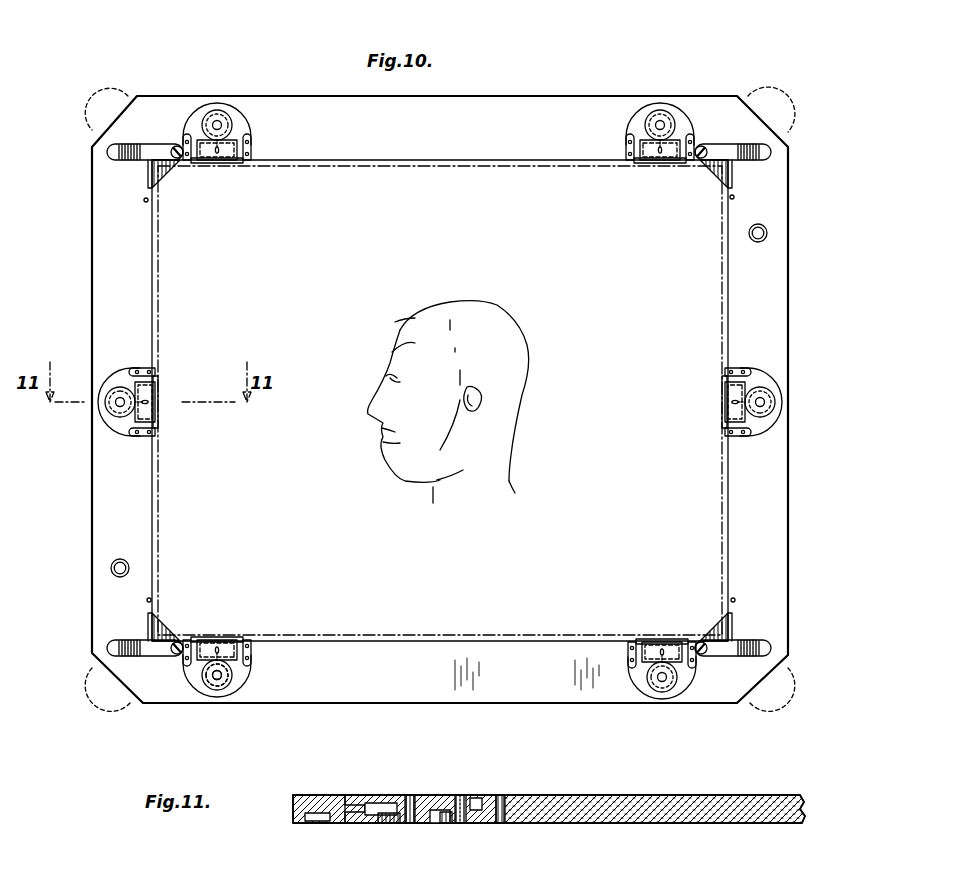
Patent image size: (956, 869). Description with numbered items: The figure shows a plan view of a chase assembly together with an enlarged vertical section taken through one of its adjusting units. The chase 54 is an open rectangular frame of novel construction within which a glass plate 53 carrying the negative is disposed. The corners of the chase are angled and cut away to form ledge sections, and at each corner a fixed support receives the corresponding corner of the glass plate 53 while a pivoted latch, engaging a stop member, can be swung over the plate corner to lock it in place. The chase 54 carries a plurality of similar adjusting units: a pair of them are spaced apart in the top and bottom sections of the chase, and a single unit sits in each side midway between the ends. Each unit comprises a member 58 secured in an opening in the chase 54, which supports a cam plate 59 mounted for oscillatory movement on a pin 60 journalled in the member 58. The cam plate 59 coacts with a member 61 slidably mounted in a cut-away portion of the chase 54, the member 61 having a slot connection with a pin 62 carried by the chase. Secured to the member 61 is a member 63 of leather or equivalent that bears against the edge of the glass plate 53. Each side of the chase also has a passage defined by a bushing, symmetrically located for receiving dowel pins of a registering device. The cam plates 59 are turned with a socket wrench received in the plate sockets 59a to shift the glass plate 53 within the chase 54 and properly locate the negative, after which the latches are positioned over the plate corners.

In FIG. 10, the glass plate 53 is at (530, 641).
In FIG. 11, the glass plate 53 is at (610, 797).
In FIG. 10, the chase 54 is at (483, 703).
In FIG. 11, the chase 54 is at (308, 822).
In FIG. 11, the member 58 is at (365, 795).
In FIG. 11, the cam plate 59 is at (438, 823).
In FIG. 10, the plate socket 59a is at (228, 680).
In FIG. 11, the plate socket 59a is at (390, 823).
In FIG. 10, the pin 60 is at (222, 678).
In FIG. 11, the pin 60 is at (412, 797).
In FIG. 11, the member 61 is at (492, 797).
In FIG. 11, the pin 62 is at (461, 797).
In FIG. 11, the member of leather 63 is at (500, 823).